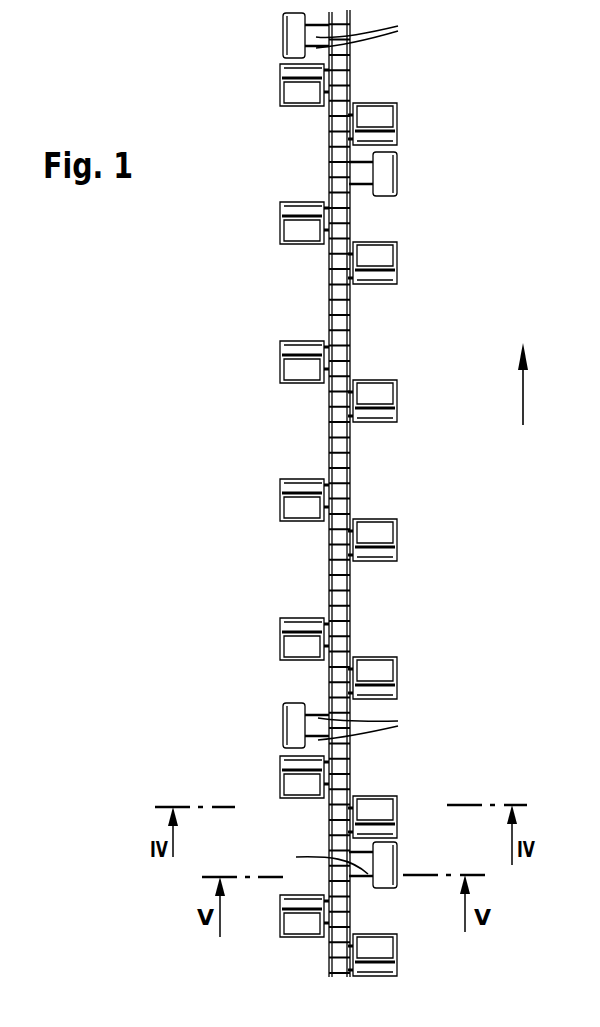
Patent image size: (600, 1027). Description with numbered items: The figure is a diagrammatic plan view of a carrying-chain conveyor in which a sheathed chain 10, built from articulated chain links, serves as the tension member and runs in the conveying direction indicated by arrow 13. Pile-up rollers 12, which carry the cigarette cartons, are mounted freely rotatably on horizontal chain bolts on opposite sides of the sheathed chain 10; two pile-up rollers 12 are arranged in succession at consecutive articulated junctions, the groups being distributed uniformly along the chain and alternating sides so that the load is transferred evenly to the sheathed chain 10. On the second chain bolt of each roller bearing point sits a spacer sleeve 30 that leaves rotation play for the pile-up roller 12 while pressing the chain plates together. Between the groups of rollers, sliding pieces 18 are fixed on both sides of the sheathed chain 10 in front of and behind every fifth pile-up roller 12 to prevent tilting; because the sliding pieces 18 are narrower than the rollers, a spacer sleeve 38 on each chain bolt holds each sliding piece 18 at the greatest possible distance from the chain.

The sheathed chain 10 is at (370, 218).
The pile-up roller 12 is at (302, 92).
The conveying direction arrow 13 is at (522, 396).
The sliding piece 18 is at (295, 34).
The spacer sleeve 30 is at (290, 66).
The spacer sleeve 38 is at (345, 445).